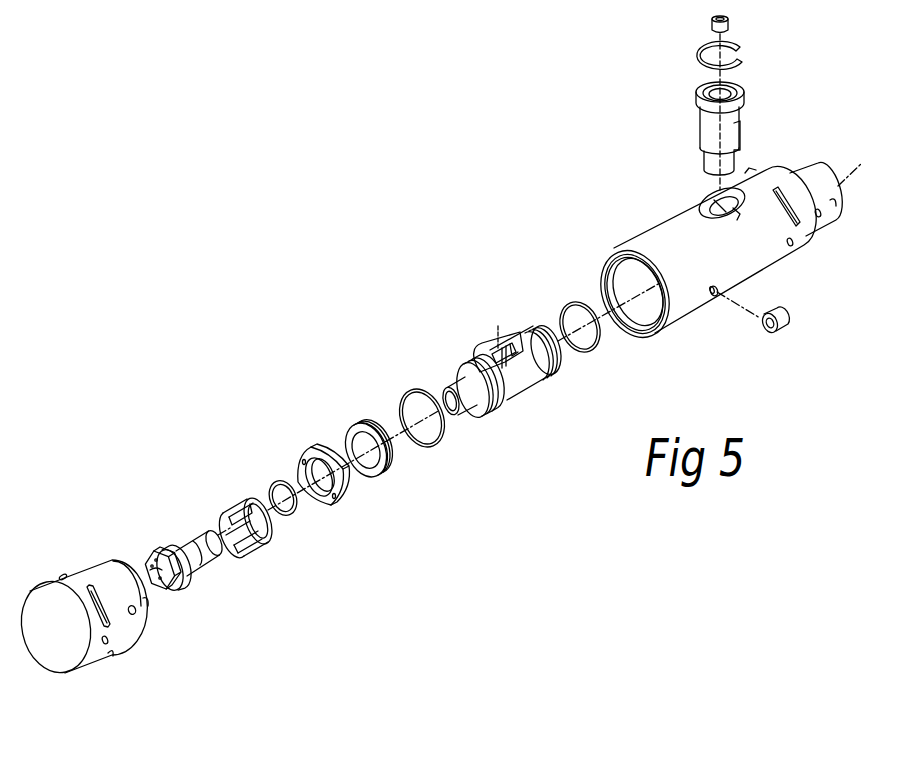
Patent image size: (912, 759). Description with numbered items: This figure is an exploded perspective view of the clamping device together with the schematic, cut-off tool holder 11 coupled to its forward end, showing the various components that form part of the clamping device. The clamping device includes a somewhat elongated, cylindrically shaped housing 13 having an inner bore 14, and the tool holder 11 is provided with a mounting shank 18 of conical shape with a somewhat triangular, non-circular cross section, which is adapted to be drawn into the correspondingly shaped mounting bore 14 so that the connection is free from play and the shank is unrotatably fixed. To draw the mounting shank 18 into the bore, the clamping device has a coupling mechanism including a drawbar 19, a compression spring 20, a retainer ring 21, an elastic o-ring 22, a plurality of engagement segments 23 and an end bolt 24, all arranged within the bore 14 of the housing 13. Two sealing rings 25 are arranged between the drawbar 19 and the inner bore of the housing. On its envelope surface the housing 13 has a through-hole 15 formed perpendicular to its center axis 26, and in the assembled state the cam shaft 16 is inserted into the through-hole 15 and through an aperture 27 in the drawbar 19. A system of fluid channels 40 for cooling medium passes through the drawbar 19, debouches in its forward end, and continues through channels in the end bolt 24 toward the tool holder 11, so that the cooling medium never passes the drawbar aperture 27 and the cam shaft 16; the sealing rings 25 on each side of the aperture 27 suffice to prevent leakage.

The tool holder 11 is at (78, 658).
The housing 13 is at (657, 238).
The inner bore 14 is at (647, 313).
The through-hole 15 is at (714, 194).
The cam shaft 16 is at (710, 132).
The mounting shank 18 is at (108, 568).
The drawbar 19 is at (537, 373).
The compression spring 20 is at (390, 458).
The retainer ring 21 is at (312, 443).
The elastic o-ring 22 is at (288, 518).
The engagement segments 23 is at (244, 492).
The end bolt 24 is at (190, 542).
The sealing rings 25 is at (421, 389).
The center axis 26 is at (852, 174).
The aperture 27 is at (502, 358).
The fluid channels 40 is at (163, 580).